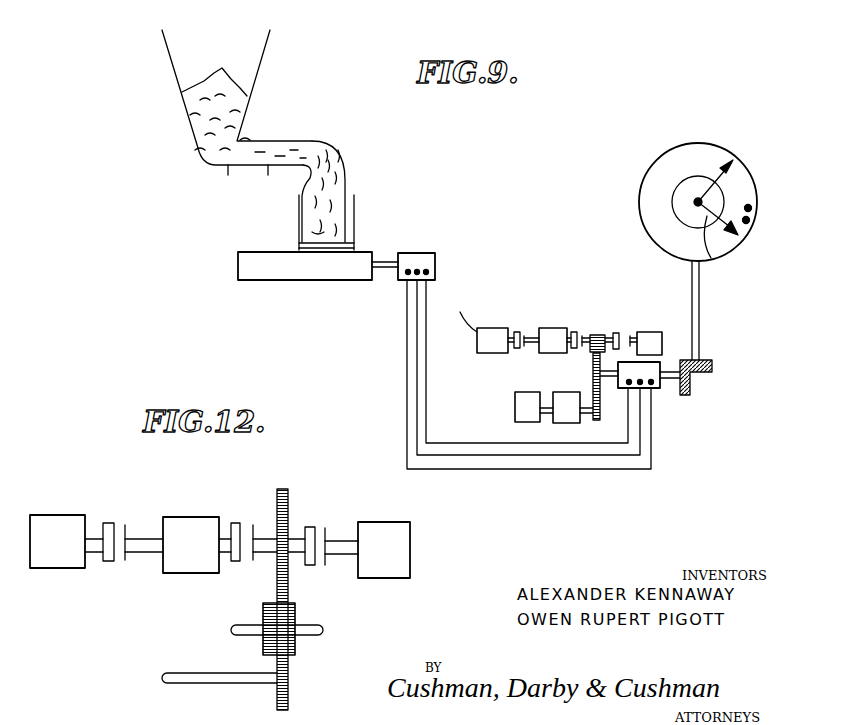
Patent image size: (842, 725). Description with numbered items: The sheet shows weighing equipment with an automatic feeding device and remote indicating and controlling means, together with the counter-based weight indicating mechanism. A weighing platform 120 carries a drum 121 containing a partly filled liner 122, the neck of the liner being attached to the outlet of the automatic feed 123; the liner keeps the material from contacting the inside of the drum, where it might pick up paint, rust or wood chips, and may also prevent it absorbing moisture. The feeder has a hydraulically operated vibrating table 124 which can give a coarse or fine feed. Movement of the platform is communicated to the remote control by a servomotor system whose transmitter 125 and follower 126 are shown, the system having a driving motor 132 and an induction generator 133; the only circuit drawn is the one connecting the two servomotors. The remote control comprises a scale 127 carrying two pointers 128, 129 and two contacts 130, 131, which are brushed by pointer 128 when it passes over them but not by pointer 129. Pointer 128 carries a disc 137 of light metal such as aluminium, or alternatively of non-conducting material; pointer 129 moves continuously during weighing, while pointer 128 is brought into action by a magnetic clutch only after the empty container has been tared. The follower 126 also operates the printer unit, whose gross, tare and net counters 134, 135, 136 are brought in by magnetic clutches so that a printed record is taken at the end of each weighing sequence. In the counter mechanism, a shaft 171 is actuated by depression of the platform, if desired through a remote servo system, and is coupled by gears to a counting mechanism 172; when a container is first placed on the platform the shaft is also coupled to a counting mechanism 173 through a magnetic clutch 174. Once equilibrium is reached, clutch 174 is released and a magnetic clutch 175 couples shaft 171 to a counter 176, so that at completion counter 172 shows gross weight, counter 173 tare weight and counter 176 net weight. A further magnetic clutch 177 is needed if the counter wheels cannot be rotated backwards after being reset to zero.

In FIG. 9, the weighing platform 120 is at (273, 267).
In FIG. 9, the drum 121 is at (355, 207).
In FIG. 9, the liner 122 is at (341, 180).
In FIG. 9, the automatic feed 123 is at (239, 136).
In FIG. 9, the vibrating table 124 is at (247, 167).
In FIG. 9, the servomotor transmitter 125 is at (507, 217).
In FIG. 9, the servomotor follower 126 is at (658, 390).
In FIG. 9, the scale 127 is at (680, 155).
In FIG. 9, the pointer 128 is at (716, 170).
In FIG. 9, the pointer 129 is at (711, 258).
In FIG. 9, the contact 130 is at (770, 210).
In FIG. 9, the contact 131 is at (751, 223).
In FIG. 9, the driving motor 132 is at (568, 420).
In FIG. 9, the induction generator 133 is at (532, 418).
In FIG. 9, the gross counter 134 is at (552, 338).
In FIG. 9, the tare counter 135 is at (492, 338).
In FIG. 9, the net counter 136 is at (650, 340).
In FIG. 9, the disc 137 is at (687, 198).
In FIG. 12, the shaft 171 is at (212, 680).
In FIG. 12, the counting mechanism 172 is at (202, 562).
In FIG. 12, the counting mechanism 173 is at (70, 564).
In FIG. 12, the magnetic clutch 174 is at (120, 527).
In FIG. 12, the magnetic clutch 175 is at (318, 532).
In FIG. 12, the counter 176 is at (387, 574).
In FIG. 12, the magnetic clutch 177 is at (247, 528).